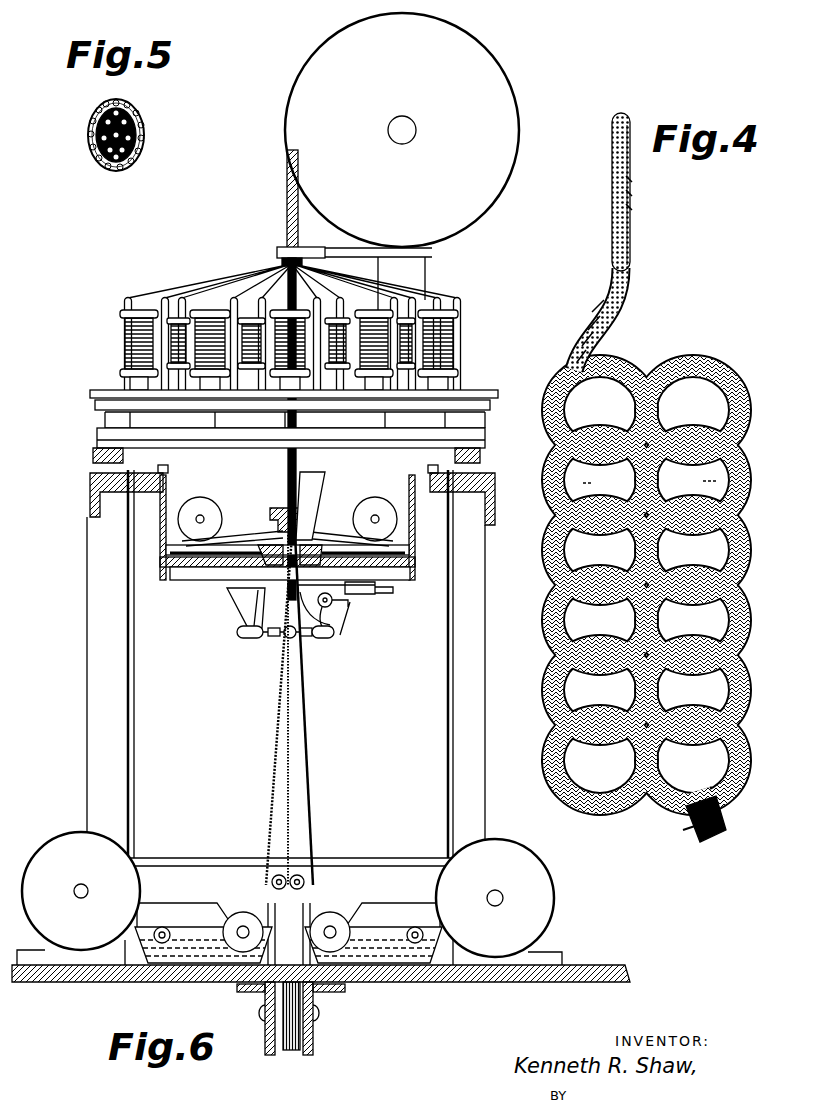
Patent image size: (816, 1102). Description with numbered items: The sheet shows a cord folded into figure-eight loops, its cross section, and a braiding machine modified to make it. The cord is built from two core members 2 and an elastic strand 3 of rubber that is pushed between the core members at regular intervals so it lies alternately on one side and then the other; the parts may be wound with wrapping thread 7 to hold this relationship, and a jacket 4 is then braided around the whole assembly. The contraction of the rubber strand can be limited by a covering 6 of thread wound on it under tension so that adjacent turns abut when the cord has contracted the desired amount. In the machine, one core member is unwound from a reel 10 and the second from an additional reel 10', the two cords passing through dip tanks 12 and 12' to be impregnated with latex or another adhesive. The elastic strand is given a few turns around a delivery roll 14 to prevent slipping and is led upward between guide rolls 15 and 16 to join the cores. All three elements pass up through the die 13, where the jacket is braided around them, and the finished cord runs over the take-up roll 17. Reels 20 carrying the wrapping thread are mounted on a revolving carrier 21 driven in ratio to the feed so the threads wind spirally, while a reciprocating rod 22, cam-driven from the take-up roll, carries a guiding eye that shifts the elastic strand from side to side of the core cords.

In FIG. 5, the core member 2 is at (139, 136).
In FIG. 4, the core member 2 is at (617, 115).
In FIG. 6, the core member 2 is at (312, 770).
In FIG. 5, the elastic strand 3 is at (93, 123).
In FIG. 4, the elastic strand 3 is at (632, 128).
In FIG. 6, the elastic strand 3 is at (291, 745).
In FIG. 5, the jacket 4 is at (125, 104).
In FIG. 4, the jacket 4 is at (588, 397).
In FIG. 4, the covering 6 is at (630, 178).
In FIG. 5, the wrapping thread 7 is at (93, 144).
In FIG. 4, the wrapping thread 7 is at (600, 298).
In FIG. 6, the wrapping thread 7 is at (336, 540).
In FIG. 6, the reel 10 is at (78, 886).
In FIG. 6, the additional reel 10' is at (503, 894).
In FIG. 6, the dip tank 12 is at (203, 917).
In FIG. 6, the dip tank 12' is at (373, 919).
In FIG. 6, the die 13 is at (280, 254).
In FIG. 6, the delivery roll 14 is at (313, 1036).
In FIG. 6, the guide roll 15 is at (294, 874).
In FIG. 6, the guide roll 16 is at (274, 641).
In FIG. 6, the take-up roll 17 is at (503, 93).
In FIG. 6, the reel 20 is at (376, 497).
In FIG. 6, the revolving carrier 21 is at (201, 568).
In FIG. 6, the reciprocating rod 22 is at (340, 630).